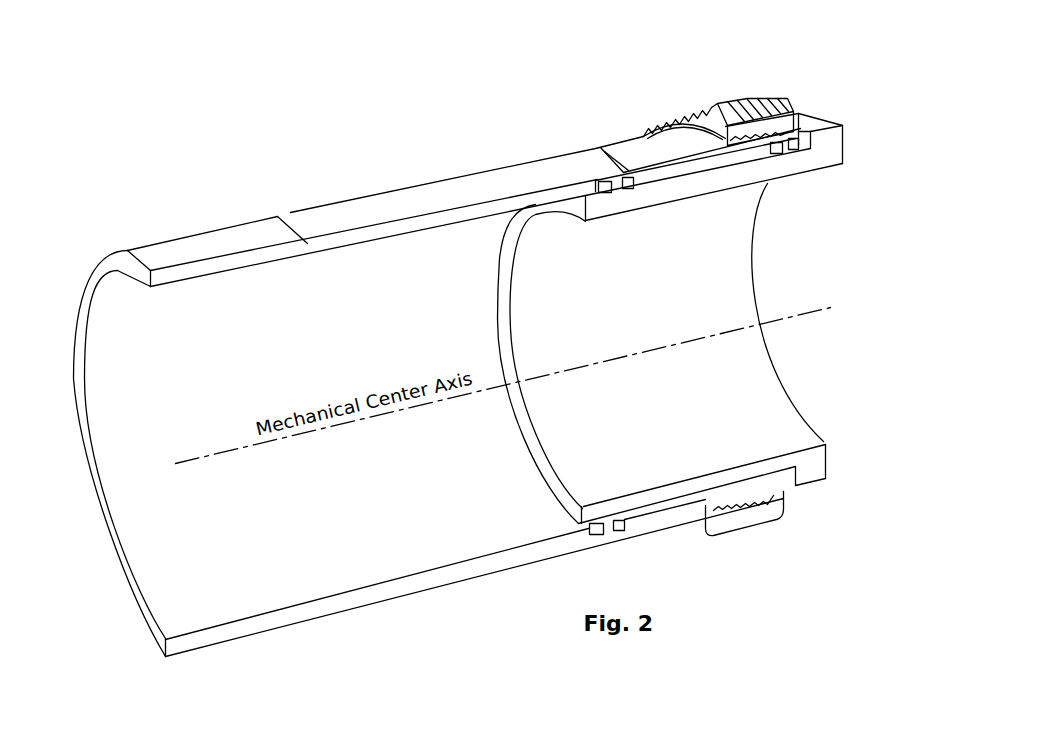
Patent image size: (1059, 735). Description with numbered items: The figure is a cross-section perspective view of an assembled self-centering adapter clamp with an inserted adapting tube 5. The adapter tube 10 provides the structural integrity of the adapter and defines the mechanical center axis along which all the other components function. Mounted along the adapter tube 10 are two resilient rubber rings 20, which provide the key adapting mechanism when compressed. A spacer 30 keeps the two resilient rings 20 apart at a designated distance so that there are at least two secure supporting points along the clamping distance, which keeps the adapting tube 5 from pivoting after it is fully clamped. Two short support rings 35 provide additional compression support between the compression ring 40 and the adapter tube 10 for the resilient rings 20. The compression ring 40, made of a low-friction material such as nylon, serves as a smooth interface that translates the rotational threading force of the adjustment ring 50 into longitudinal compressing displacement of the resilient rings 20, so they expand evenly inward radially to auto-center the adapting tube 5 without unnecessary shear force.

The adapting tube 5 is at (827, 148).
The adapter tube 10 is at (353, 218).
The resilient rings 20 is at (627, 187).
The spacer 30 is at (687, 172).
The support rings 35 is at (603, 188).
The compression ring 40 is at (793, 150).
The adjustment ring 50 is at (758, 130).